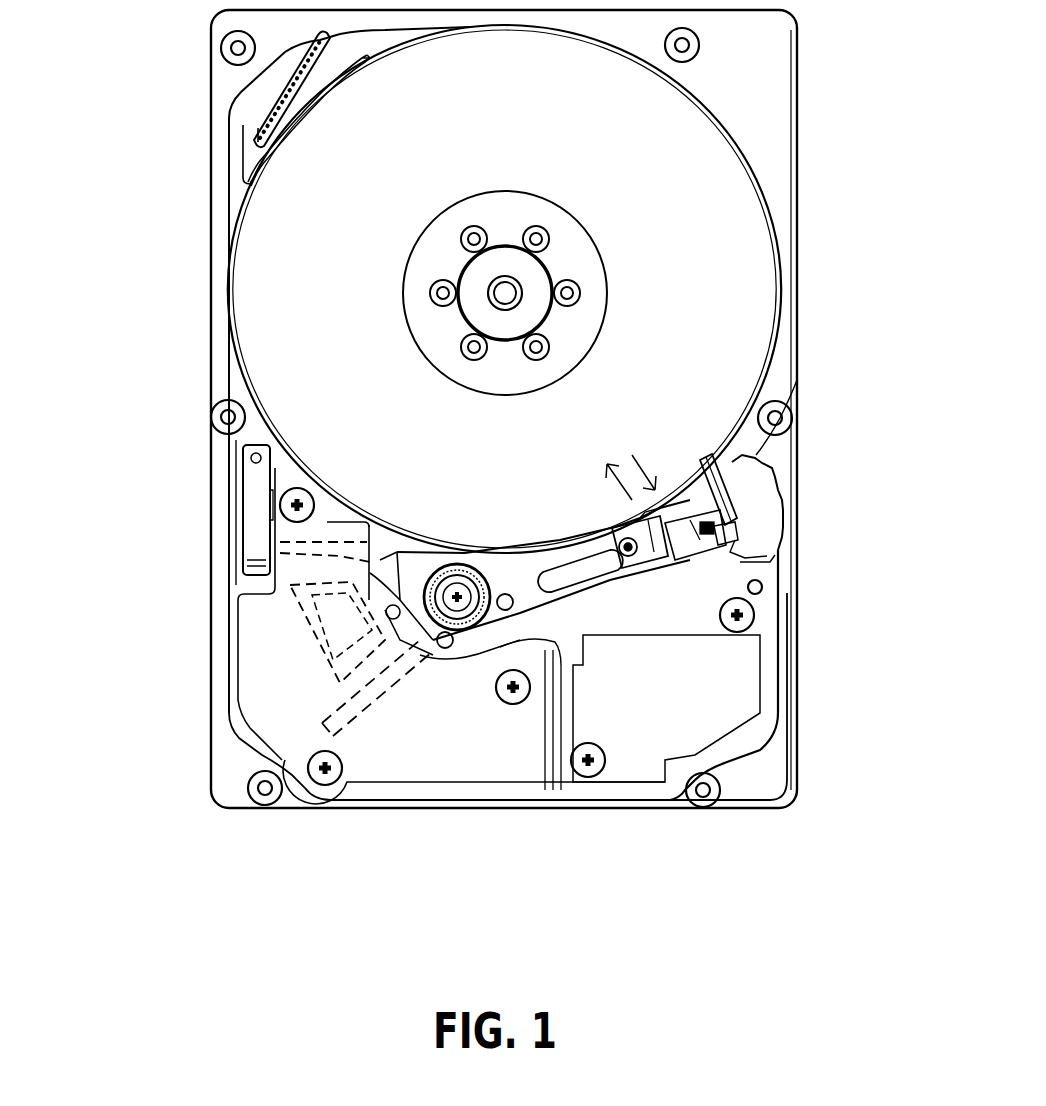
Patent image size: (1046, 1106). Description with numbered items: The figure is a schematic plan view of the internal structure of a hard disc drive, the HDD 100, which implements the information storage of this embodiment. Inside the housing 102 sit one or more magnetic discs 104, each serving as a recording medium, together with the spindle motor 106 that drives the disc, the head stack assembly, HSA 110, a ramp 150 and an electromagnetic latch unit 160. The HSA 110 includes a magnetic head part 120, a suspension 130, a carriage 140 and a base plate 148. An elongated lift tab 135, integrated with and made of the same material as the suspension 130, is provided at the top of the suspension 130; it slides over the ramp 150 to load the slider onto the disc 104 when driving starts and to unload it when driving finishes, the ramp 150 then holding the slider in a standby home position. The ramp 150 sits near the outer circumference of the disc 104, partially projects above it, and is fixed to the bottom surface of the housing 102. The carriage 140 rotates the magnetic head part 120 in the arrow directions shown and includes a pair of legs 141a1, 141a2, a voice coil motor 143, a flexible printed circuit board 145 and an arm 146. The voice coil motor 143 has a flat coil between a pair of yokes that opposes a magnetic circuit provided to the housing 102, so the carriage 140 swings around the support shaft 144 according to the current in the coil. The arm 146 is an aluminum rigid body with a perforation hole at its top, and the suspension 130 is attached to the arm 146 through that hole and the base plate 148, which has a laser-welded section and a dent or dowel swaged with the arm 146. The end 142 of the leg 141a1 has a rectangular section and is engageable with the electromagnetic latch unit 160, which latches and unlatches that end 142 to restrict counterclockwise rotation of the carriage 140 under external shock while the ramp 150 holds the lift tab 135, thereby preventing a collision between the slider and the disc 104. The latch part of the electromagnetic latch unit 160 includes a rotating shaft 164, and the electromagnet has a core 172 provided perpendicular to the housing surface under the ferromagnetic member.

The HDD 100 is at (180, 216).
The housing 102 is at (800, 283).
The magnetic disc 104 is at (725, 240).
The spindle motor 106 is at (520, 315).
The HSA 110 is at (539, 527).
The magnetic head part 120 is at (703, 539).
The suspension 130 is at (690, 532).
The lift tab 135 is at (728, 524).
The carriage 140 is at (370, 565).
The leg 141a1 is at (370, 572).
The leg 141a2 is at (367, 683).
The end 142 is at (243, 548).
The voice coil motor 143 is at (320, 623).
The support shaft 144 is at (460, 610).
The flexible printed circuit board 145 is at (470, 652).
The arm 146 is at (582, 590).
The base plate 148 is at (637, 563).
The ramp 150 is at (752, 503).
The electromagnetic latch unit 160 is at (247, 523).
The rotating shaft 164 is at (270, 496).
The core 172 is at (398, 605).